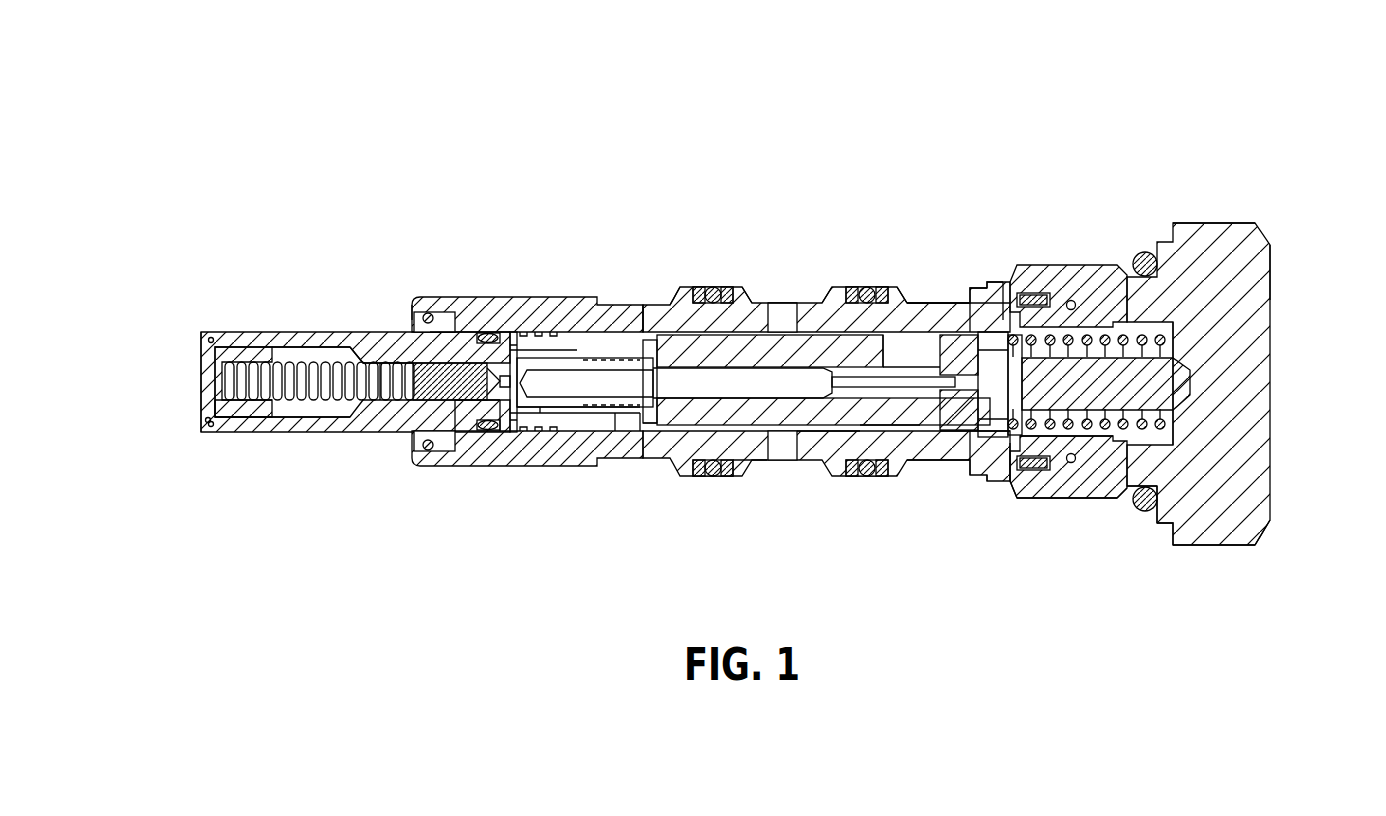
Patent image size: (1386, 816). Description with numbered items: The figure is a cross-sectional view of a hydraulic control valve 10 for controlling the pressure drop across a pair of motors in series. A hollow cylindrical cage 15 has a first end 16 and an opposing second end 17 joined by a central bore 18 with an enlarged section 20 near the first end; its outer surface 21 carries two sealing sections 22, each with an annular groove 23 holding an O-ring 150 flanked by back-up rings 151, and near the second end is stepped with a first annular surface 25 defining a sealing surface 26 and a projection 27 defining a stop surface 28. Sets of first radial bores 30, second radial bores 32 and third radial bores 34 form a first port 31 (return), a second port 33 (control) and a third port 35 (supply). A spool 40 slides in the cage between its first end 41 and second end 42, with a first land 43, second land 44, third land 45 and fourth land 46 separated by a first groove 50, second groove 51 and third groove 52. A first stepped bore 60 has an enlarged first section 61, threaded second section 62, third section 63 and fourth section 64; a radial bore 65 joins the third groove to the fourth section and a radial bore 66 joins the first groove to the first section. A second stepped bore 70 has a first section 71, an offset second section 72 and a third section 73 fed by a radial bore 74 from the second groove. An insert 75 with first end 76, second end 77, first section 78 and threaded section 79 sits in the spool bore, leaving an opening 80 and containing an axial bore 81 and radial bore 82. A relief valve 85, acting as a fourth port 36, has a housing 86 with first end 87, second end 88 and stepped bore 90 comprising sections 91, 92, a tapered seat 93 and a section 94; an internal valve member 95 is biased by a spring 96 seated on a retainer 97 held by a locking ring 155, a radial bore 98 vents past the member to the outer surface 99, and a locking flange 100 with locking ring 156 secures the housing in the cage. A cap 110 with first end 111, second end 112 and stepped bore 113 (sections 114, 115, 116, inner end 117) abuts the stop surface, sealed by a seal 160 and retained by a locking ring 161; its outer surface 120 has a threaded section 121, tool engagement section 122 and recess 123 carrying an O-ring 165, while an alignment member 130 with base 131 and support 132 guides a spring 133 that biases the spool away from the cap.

The hydraulic control valve 10 is at (522, 128).
The cage 15 is at (957, 455).
The first end 16 is at (412, 310).
The second end 17 is at (1090, 305).
The central bore 18 is at (622, 425).
The enlarged section 20 is at (440, 332).
The outer surface 21 is at (462, 330).
The sealing sections 22 is at (742, 318).
The annular groove 23 is at (690, 320).
The first annular surface 25 is at (1003, 290).
The first annular sealing surface 26 is at (975, 320).
The second projection 27 is at (985, 300).
The annular stop surface 28 is at (990, 303).
The first radial bores 30 is at (667, 304).
The first port 31 is at (658, 320).
The second radial bores 32 is at (782, 320).
The second port 33 is at (795, 297).
The third radial bores 34 is at (920, 320).
The third port 35 is at (928, 274).
The fourth port 36 is at (183, 331).
The spool 40 is at (768, 470).
The first end 41 is at (530, 418).
The second end 42 is at (1030, 470).
The first annular land 43 is at (548, 418).
The second annular land 44 is at (660, 425).
The third annular land 45 is at (915, 440).
The fourth annular land 46 is at (1005, 470).
The first annular groove 50 is at (640, 425).
The second annular groove 51 is at (740, 470).
The third annular groove 52 is at (960, 440).
The first stepped bore 60 is at (690, 450).
The enlarged first section 61 is at (515, 432).
The threaded second section 62 is at (605, 350).
The third section 63 is at (812, 377).
The fourth section 64 is at (878, 378).
The radial bore 65 is at (940, 365).
The radial bore 66 is at (612, 425).
The second stepped bore 70 is at (975, 450).
The enlarged first section 71 is at (982, 394).
The second section 72 is at (958, 380).
The third section 73 is at (880, 410).
The radial bore 74 is at (825, 425).
The insert 75 is at (570, 420).
The first end 76 is at (515, 340).
The second end 77 is at (678, 383).
The first section 78 is at (590, 420).
The threaded second section 79 is at (652, 430).
The opening 80 is at (550, 340).
The axial bore 81 is at (601, 393).
The radial bore 82 is at (527, 340).
The relief valve 85 is at (263, 301).
The housing 86 is at (310, 432).
The first end 87 is at (207, 332).
The second end 88 is at (497, 445).
The stepped bore 90 is at (313, 362).
The enlarged first section 91 is at (283, 332).
The second section 92 is at (365, 332).
The tapered third section 93 is at (487, 335).
The fourth section 94 is at (490, 440).
The internal valve member 95 is at (445, 440).
The spring 96 is at (283, 432).
The cylindrical retainer 97 is at (225, 432).
The radial bore 98 is at (393, 345).
The outer surface 99 is at (335, 332).
The annular locking flange 100 is at (430, 395).
The cap 110 is at (1263, 168).
The first end 111 is at (1035, 300).
The second end 112 is at (1255, 540).
The stepped bore 113 is at (1145, 262).
The enlarged first section 114 is at (1050, 470).
The second section 115 is at (1130, 480).
The third section 116 is at (1190, 530).
The inner end 117 is at (1180, 385).
The outer surface 120 is at (1245, 548).
The threaded section 121 is at (1068, 470).
The tool engagement section 122 is at (1215, 222).
The annular recess 123 is at (1148, 505).
The alignment member 130 is at (1190, 335).
The enlarged base 131 is at (1258, 275).
The elongated cylindrical support portion 132 is at (1114, 393).
The spring 133 is at (1090, 450).
The O-ring 150 is at (712, 288).
The back-up ring 151 is at (698, 290).
The annular locking ring 155 is at (205, 425).
The locking ring 156 is at (428, 313).
The resilient annular seal 160 is at (1050, 300).
The locking ring 161 is at (1105, 470).
The O-ring 165 is at (1170, 495).